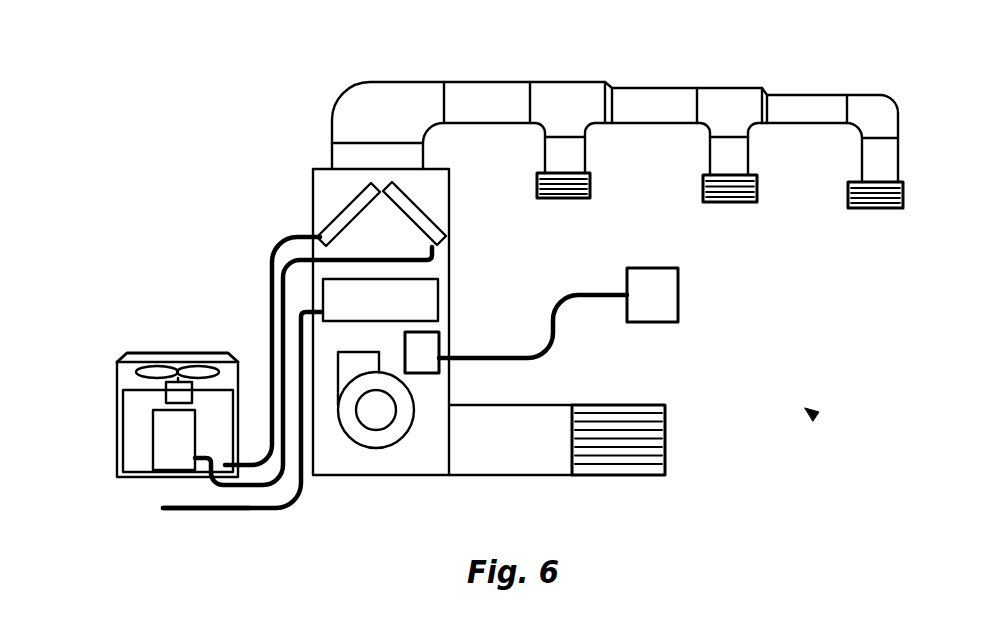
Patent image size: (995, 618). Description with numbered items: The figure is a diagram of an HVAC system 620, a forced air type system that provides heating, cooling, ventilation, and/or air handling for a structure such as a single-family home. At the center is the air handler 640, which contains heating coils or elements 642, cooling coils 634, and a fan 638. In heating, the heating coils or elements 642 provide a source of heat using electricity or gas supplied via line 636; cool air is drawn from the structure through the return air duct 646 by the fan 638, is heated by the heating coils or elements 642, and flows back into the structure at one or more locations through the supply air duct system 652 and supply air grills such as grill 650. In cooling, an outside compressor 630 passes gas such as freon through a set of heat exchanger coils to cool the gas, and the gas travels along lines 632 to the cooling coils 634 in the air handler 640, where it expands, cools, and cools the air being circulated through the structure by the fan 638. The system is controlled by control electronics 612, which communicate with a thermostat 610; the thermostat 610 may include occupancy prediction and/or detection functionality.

The thermostat 610 is at (652, 295).
The control electronics 612 is at (439, 340).
The HVAC system 620 is at (814, 416).
The outside compressor 630 is at (180, 353).
The refrigerant lines 632 is at (272, 267).
The cooling coils 634 is at (342, 212).
The line 636 is at (272, 509).
The fan 638 is at (398, 448).
The air handler 640 is at (312, 169).
The heating coils or elements 642 is at (380, 300).
The return air duct 646 is at (665, 445).
The supply air grill 650 is at (590, 185).
The supply air duct system 652 is at (648, 82).